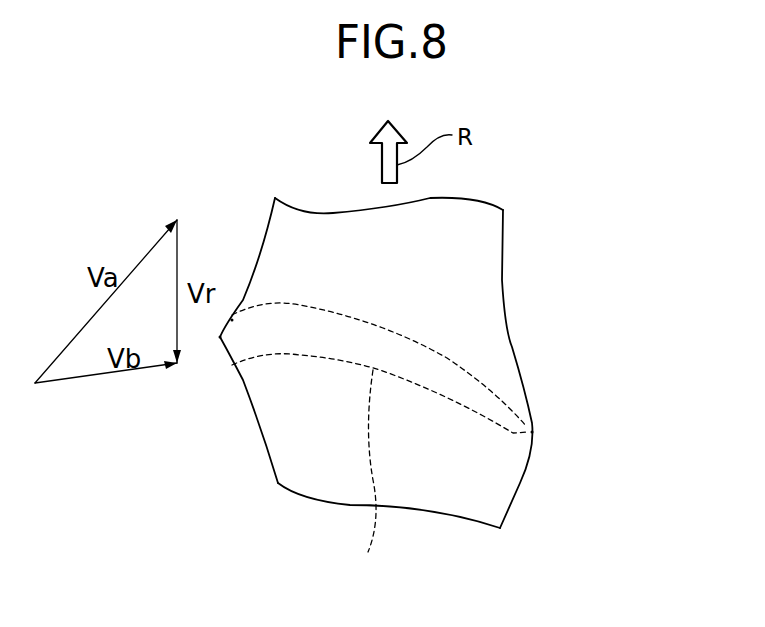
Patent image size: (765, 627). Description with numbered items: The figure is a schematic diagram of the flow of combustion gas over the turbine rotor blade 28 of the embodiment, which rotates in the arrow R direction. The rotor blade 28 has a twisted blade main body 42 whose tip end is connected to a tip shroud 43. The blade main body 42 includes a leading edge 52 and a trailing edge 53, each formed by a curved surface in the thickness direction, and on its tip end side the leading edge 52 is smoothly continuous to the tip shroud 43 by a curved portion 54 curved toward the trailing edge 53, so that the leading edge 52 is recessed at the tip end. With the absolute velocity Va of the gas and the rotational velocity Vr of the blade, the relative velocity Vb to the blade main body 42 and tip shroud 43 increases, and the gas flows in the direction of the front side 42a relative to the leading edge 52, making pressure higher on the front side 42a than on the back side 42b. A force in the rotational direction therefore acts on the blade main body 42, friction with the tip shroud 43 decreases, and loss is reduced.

The rotor blade 28 is at (532, 483).
The tip shroud 43 is at (493, 245).
The blade main body 42 is at (493, 413).
The front side 42a is at (365, 476).
The back side 42b is at (457, 360).
The trailing edge 53 is at (532, 432).
The leading edge 52 is at (221, 338).
The curved portion 54 is at (235, 340).